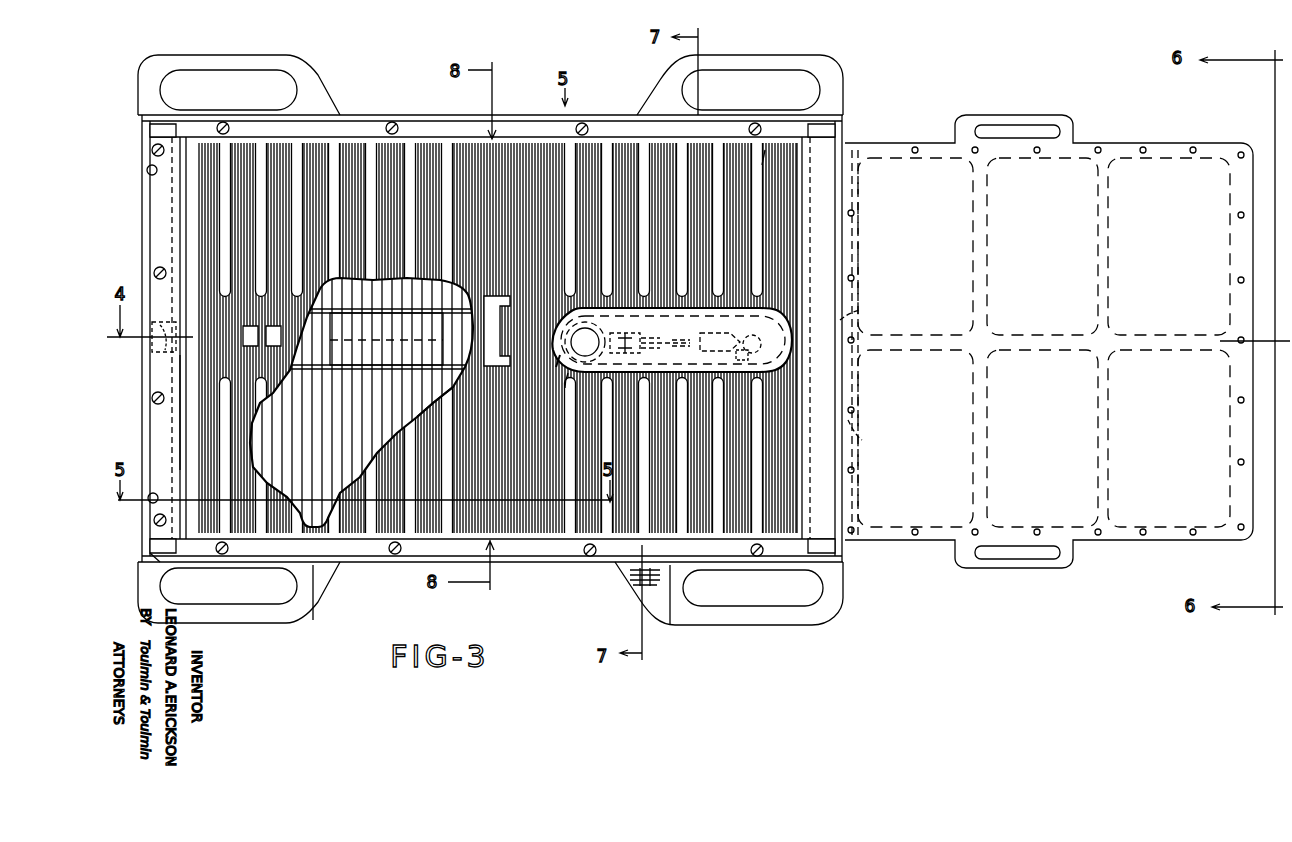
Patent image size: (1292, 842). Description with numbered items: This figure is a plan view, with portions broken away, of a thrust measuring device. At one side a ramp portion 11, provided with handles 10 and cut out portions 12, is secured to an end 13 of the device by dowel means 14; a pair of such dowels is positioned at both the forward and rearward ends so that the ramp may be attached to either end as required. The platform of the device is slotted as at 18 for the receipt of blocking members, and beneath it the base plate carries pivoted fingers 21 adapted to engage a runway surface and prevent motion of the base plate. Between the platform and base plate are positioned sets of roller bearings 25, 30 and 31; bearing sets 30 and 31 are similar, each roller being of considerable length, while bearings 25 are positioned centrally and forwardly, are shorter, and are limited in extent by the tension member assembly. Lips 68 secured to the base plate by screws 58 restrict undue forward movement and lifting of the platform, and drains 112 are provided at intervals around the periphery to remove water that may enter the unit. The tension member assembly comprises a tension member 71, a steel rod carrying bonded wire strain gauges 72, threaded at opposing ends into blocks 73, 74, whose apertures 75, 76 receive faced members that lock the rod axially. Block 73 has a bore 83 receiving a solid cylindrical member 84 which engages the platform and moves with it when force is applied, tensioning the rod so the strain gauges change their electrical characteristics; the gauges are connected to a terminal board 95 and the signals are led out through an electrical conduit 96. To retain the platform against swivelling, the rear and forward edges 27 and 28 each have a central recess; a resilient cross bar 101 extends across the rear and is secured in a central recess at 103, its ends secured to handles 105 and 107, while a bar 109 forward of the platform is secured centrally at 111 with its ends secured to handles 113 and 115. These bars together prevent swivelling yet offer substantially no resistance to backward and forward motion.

The handles 10 is at (1020, 124).
The ramp portion 11 is at (1028, 206).
The cut out portions 12 is at (1152, 206).
The end of the device 13 is at (768, 142).
The dowel means 14 is at (147, 170).
The slots 18 is at (372, 150).
The pivoted fingers 21 is at (270, 327).
The roller bearings 25 is at (440, 330).
The rear edge 27 is at (855, 392).
The forward edge 28 is at (178, 432).
The roller bearing set 30 is at (458, 286).
The roller bearing set 31 is at (455, 392).
The screws 58 is at (398, 125).
The lips 68 is at (345, 126).
The tension member 71 is at (671, 351).
The bonded wire strain gauges 72 is at (720, 335).
The block 73 is at (625, 335).
The block 74 is at (746, 340).
The aperture 75 is at (585, 342).
The aperture 76 is at (754, 351).
The bore 83 is at (562, 355).
The solid cylindrical member 84 is at (566, 380).
The terminal board 95 is at (684, 310).
The electrical conduit 96 is at (630, 578).
The resilient cross bar 101 is at (848, 438).
The central recess 103 is at (852, 318).
The handle 105 is at (843, 585).
The handle 107 is at (838, 112).
The bar 109 is at (163, 576).
The central securing point 111 is at (140, 360).
The drains 112 is at (488, 128).
The handle 113 is at (148, 572).
The handle 115 is at (314, 80).